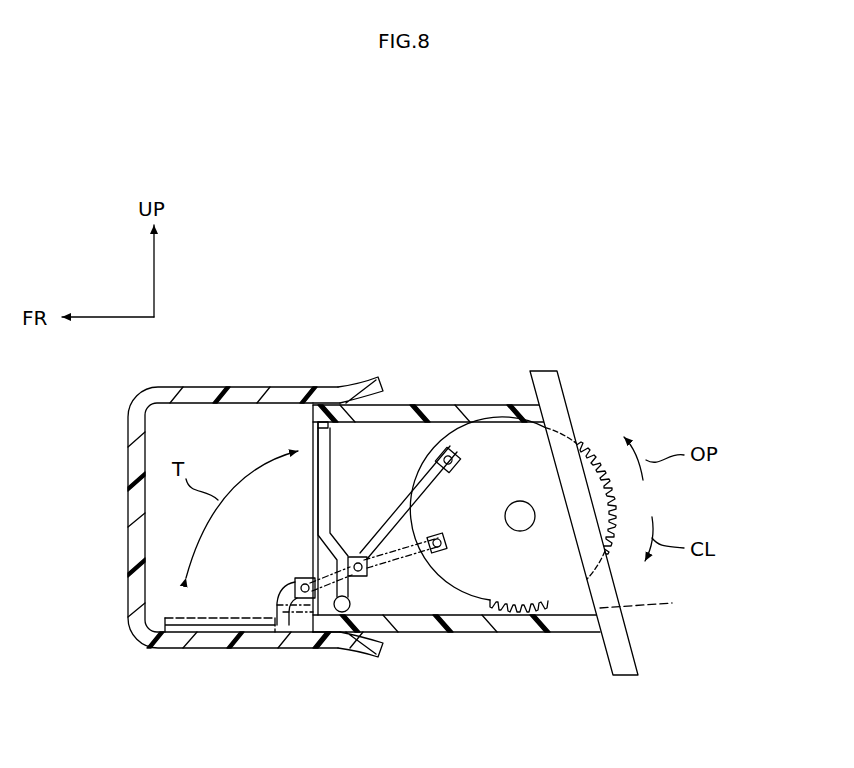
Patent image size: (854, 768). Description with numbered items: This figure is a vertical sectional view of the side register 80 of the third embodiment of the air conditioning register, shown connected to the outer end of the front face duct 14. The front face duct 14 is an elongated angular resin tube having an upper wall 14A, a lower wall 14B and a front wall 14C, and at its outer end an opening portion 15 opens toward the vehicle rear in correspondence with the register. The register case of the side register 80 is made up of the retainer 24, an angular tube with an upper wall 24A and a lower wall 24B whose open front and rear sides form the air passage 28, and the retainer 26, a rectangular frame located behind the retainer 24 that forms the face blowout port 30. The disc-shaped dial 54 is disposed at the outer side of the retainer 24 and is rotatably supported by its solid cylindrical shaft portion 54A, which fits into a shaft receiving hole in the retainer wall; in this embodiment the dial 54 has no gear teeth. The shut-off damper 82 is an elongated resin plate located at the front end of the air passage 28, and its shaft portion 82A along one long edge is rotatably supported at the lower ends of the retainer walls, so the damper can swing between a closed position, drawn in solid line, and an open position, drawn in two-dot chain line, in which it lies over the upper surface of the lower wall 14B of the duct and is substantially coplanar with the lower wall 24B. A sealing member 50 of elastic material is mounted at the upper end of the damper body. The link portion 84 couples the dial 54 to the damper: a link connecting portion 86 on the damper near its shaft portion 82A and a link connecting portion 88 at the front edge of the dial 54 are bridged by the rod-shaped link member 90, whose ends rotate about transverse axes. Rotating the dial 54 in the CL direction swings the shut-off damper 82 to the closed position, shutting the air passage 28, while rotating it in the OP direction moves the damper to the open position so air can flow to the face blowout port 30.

The front face duct 14 is at (206, 385).
The upper wall 14A is at (268, 386).
The lower wall 14B is at (195, 650).
The front wall 14C is at (128, 503).
The opening portion 15 is at (367, 398).
The sealing member 50 is at (340, 402).
The link portion 84 is at (395, 442).
The retainer 24 is at (435, 401).
The upper wall 24A is at (486, 404).
The lower wall 24B is at (512, 634).
The air passage 28 is at (365, 457).
The link connecting portion 86 is at (277, 650).
The link member 90 is at (391, 528).
The link connecting portion 88 is at (454, 452).
The shut-off damper 82 is at (311, 506).
The shaft portion 82A is at (345, 633).
The dial 54 is at (547, 596).
The shaft portion 54A is at (520, 501).
The retainer 26 is at (640, 661).
The face blowout port 30 is at (706, 610).
The side register 80 is at (641, 398).